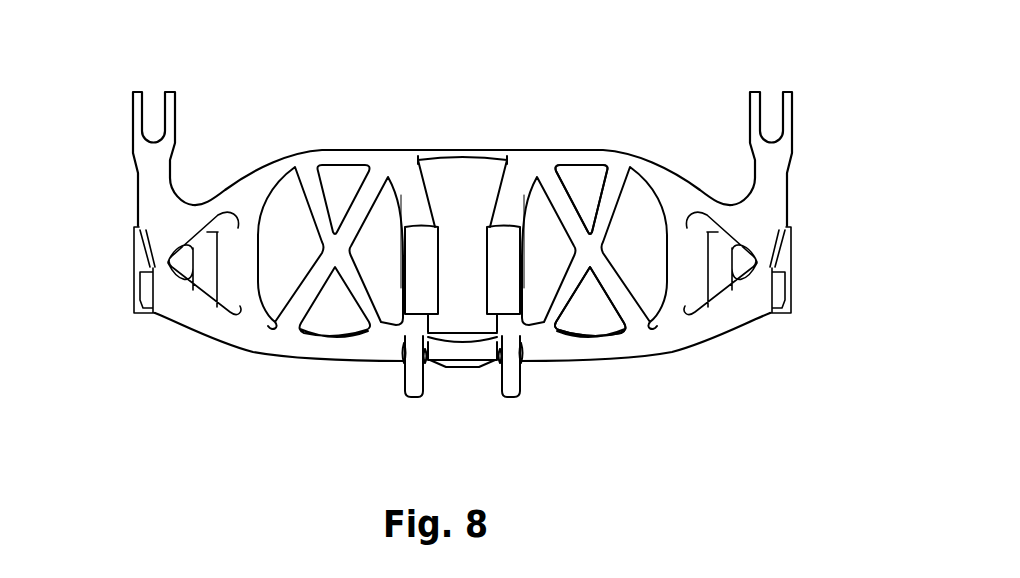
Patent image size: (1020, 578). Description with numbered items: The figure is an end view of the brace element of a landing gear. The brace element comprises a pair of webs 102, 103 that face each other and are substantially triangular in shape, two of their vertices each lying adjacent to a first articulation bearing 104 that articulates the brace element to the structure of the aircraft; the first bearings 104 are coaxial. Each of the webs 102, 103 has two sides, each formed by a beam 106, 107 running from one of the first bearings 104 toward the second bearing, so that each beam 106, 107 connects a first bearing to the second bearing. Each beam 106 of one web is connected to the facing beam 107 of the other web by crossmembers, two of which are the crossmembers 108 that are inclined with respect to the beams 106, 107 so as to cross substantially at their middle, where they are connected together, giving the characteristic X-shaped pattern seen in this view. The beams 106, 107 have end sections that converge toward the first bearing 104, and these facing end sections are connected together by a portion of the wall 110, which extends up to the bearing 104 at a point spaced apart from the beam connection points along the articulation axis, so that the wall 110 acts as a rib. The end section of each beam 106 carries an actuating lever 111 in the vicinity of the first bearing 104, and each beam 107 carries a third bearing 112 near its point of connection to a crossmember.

The web 102 is at (462, 155).
The web 103 is at (377, 361).
The first articulation bearing 104 is at (133, 302).
The beam 106 is at (345, 157).
The beam 107 is at (280, 353).
The crossmember 108 is at (567, 210).
The wall 110 is at (228, 254).
The actuating lever 111 is at (133, 103).
The third bearing 112 is at (417, 376).